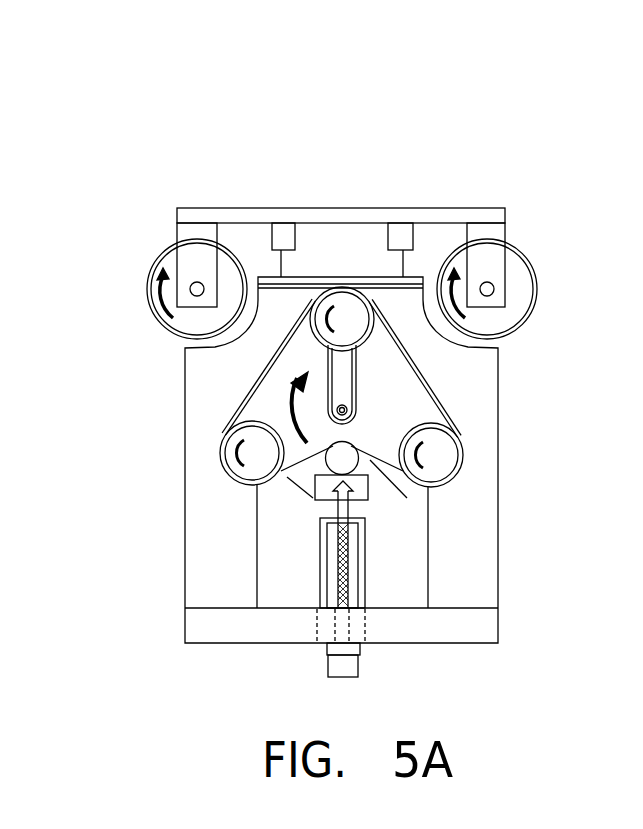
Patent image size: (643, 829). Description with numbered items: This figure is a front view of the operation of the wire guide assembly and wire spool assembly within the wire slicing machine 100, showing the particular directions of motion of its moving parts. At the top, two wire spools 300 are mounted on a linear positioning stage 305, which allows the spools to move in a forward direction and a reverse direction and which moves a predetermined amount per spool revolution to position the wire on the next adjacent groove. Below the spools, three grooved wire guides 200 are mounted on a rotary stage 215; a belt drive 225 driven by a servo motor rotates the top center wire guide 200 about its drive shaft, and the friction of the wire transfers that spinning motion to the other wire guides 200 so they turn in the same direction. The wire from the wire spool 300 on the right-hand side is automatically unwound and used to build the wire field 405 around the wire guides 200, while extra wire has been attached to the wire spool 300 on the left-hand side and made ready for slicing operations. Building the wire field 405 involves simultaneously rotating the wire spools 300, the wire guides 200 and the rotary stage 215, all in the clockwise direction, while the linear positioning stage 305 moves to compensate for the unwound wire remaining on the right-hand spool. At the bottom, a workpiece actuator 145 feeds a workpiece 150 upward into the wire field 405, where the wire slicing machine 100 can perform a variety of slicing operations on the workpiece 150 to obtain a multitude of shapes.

The wire slicing machine 100 is at (108, 151).
The linear positioning stage 305 is at (328, 242).
The wire spool 300 is at (160, 256).
The wire guide 200 is at (350, 300).
The belt drive 225 is at (357, 367).
The rotary stage 215 is at (403, 395).
The wire field 405 is at (407, 498).
The workpiece 150 is at (315, 497).
The workpiece actuator 145 is at (320, 557).